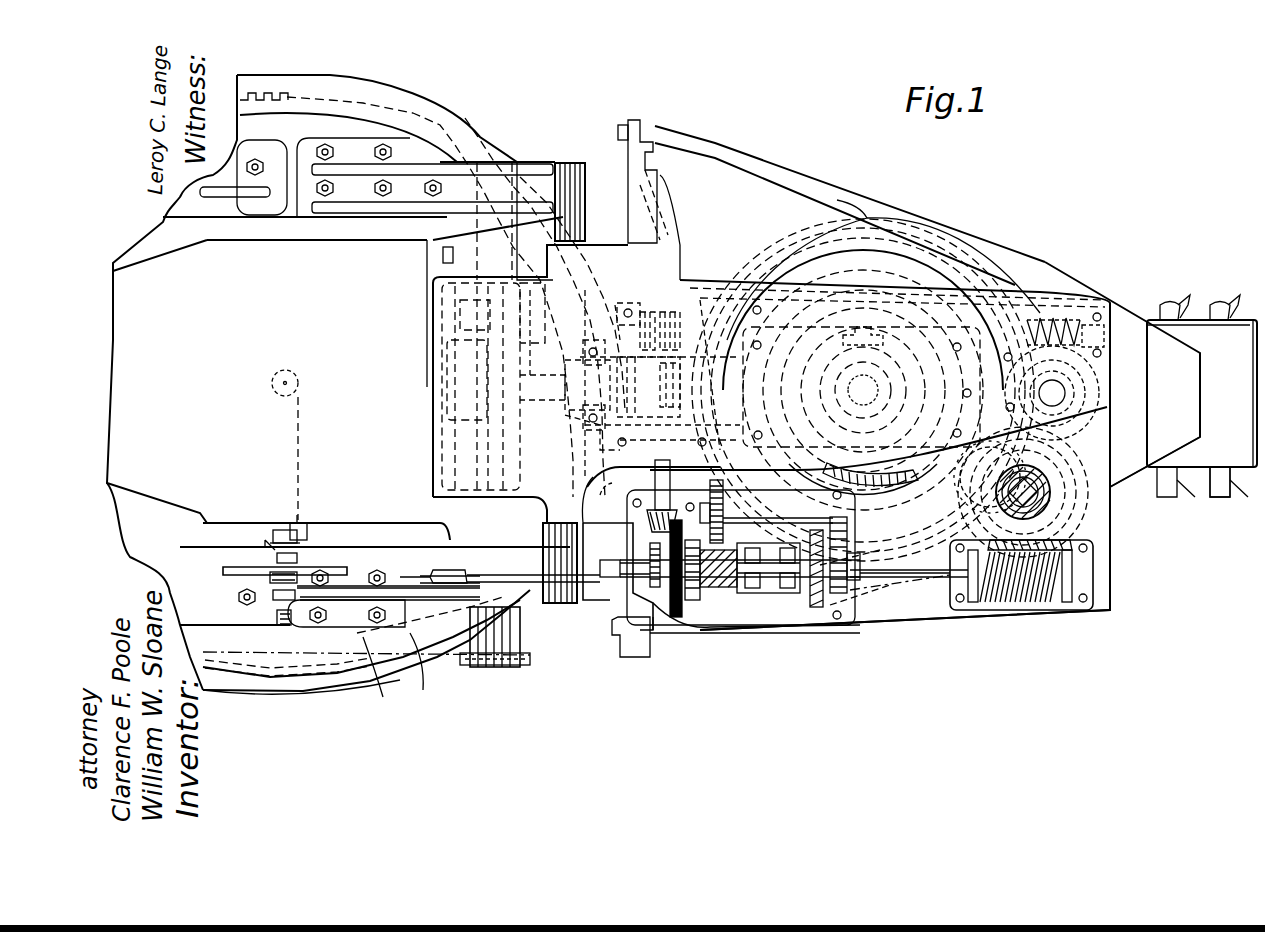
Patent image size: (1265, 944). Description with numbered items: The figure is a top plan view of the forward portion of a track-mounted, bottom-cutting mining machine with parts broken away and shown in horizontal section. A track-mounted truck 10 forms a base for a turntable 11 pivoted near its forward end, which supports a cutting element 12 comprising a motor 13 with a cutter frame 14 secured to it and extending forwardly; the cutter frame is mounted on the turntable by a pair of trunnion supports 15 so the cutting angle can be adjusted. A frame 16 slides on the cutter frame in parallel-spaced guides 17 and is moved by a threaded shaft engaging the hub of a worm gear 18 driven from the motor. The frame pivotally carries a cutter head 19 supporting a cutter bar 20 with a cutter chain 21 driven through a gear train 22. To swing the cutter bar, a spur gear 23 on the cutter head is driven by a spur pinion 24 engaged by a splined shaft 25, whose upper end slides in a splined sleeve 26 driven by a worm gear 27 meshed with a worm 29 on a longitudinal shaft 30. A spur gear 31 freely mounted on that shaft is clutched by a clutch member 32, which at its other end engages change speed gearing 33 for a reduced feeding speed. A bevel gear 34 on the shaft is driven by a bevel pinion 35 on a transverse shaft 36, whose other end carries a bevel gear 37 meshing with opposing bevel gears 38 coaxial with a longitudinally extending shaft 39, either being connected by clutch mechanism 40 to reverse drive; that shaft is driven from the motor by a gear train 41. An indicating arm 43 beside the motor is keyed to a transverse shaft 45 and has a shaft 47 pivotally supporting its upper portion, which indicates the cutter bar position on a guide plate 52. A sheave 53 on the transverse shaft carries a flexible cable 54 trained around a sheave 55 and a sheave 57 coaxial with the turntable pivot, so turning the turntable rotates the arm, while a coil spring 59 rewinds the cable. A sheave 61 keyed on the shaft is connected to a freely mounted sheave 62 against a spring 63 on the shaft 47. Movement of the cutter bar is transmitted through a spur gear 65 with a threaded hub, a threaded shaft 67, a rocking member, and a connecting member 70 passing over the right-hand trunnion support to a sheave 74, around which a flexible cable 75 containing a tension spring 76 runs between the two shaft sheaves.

The track-mounted truck 10 is at (242, 698).
The turntable 11 is at (386, 672).
The cutting element 12 is at (741, 138).
The motor 13 is at (167, 262).
The cutter frame 14 is at (692, 282).
The trunnion supports 15 is at (592, 170).
The frame 16 is at (828, 185).
The guides 17 is at (650, 152).
The worm gear 18 is at (1100, 378).
The cutter head 19 is at (1135, 478).
The cutter bar 20 is at (1212, 322).
The cutter chain 21 is at (1240, 498).
The gear train 22 is at (895, 470).
The spur gear 23 is at (998, 445).
The spur pinion 24 is at (1080, 460).
The splined shaft 25 is at (1050, 490).
The splined sleeve 26 is at (1047, 495).
The worm gear 27 is at (1050, 502).
The worm 29 is at (1017, 595).
The shaft 30 is at (945, 580).
The spur gear 31 is at (718, 580).
The clutch member 32 is at (755, 600).
The change speed gearing 33 is at (813, 508).
The bevel gear 34 is at (680, 600).
The bevel pinion 35 is at (640, 527).
The transverse shaft 36 is at (655, 484).
The bevel gear 37 is at (608, 501).
The opposing bevel gears 38 is at (693, 350).
The longitudinally extending shaft 39 is at (540, 375).
The clutch mechanism 40 is at (652, 414).
The gear train 41 is at (446, 415).
The indicating arm 43 is at (265, 575).
The transverse shaft 45 is at (290, 622).
The shaft 47 is at (270, 547).
The guide plate 52 is at (300, 565).
The sheave 53 is at (282, 545).
The flexible cable 54 is at (300, 420).
The sheave 55 is at (305, 540).
The sheave 57 is at (272, 390).
The coil spring 59 is at (280, 625).
The sheave 61 is at (270, 600).
The sheave 62 is at (265, 590).
The spring 63 is at (272, 564).
The spur gear 65 is at (632, 592).
The threaded shaft 67 is at (606, 580).
The connecting member 70 is at (550, 618).
The sheave 74 is at (428, 690).
The flexible cable 75 is at (350, 590).
The tension spring 76 is at (375, 585).